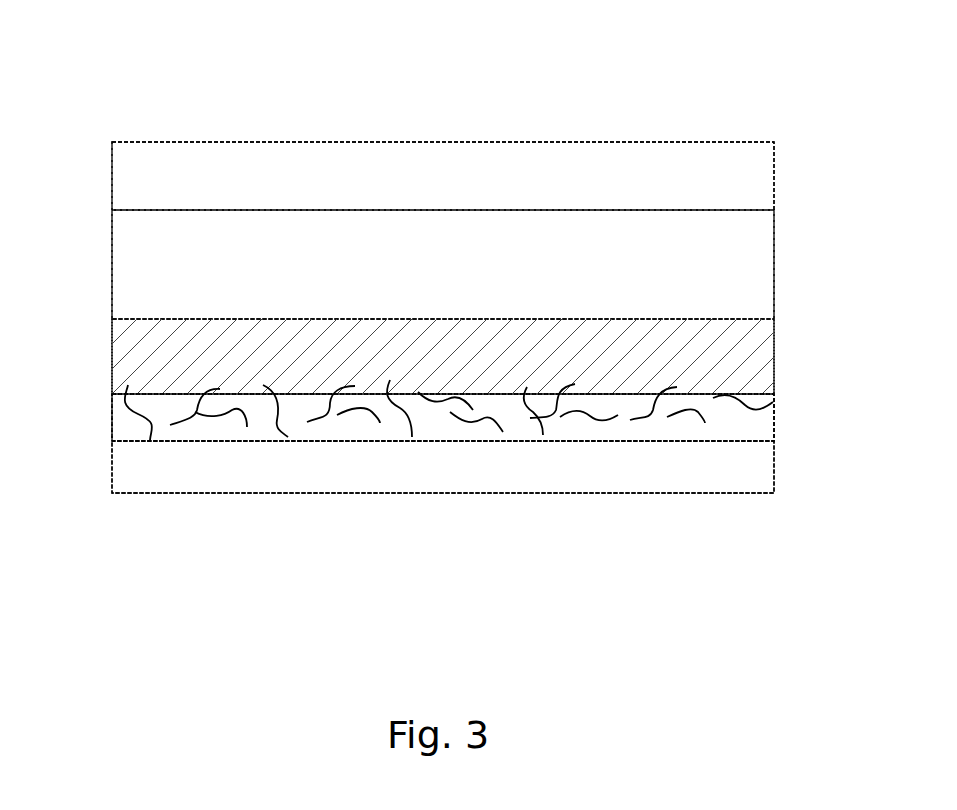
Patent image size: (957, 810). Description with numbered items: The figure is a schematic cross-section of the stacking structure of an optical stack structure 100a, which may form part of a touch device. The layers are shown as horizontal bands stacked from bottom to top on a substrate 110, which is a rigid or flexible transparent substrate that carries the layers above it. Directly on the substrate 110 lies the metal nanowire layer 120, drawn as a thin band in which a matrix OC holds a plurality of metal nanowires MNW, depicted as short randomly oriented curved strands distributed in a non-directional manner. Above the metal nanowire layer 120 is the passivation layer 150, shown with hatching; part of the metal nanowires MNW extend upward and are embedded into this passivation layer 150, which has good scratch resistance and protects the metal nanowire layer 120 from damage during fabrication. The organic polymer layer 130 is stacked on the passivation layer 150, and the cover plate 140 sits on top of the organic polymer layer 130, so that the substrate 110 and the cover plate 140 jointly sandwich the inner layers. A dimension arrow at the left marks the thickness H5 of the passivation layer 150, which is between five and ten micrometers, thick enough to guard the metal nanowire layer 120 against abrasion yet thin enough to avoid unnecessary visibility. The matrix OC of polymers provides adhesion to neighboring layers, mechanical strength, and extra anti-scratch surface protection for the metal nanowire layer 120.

The optical stack structure 100a is at (870, 52).
The substrate 110 is at (770, 467).
The metal nanowire layer 120 is at (872, 382).
The organic polymer layer 130 is at (770, 264).
The cover plate 140 is at (770, 174).
The passivation layer 150 is at (770, 357).
The metal nanowires MNW is at (737, 398).
The matrix OC is at (770, 431).
The thickness of the passivation layer H5 is at (112, 319).